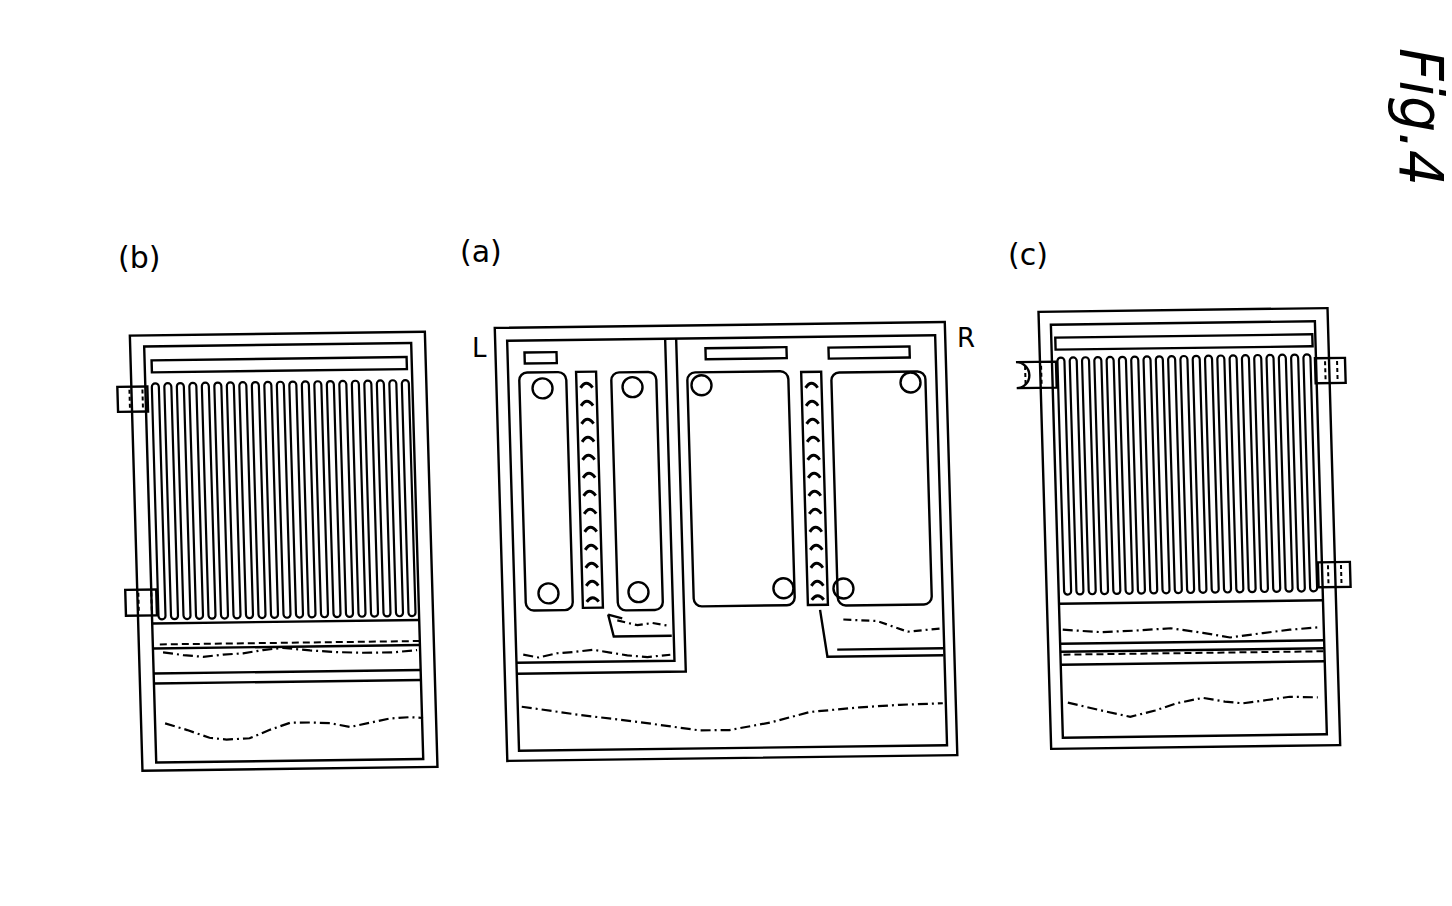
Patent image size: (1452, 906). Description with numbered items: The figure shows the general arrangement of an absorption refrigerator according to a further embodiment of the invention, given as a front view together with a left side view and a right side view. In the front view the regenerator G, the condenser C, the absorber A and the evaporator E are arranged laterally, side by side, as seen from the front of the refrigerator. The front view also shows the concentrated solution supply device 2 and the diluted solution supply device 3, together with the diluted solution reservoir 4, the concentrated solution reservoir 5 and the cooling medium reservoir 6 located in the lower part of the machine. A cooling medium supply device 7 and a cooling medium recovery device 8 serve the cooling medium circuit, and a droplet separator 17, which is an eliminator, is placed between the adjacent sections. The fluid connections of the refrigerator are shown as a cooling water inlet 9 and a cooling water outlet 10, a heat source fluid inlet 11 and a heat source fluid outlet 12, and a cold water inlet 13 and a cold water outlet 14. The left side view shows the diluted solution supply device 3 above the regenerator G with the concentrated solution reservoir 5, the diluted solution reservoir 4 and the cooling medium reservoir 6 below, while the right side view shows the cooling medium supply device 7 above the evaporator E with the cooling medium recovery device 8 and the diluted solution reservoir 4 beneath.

The concentrated solution supply device 2 is at (733, 355).
The diluted solution supply device 3 is at (207, 368).
The diluted solution reservoir 4 is at (315, 738).
The concentrated solution reservoir 5 is at (253, 662).
The cooling medium reservoir 6 is at (392, 630).
The cooling medium supply device 7 is at (845, 353).
The cooling medium recovery device 8 is at (895, 637).
The cooling water inlet 9 is at (637, 600).
The cooling water outlet 10 is at (633, 387).
The heat source fluid inlet 11 is at (543, 600).
The heat source fluid outlet 12 is at (548, 383).
The cold water inlet 13 is at (843, 600).
The cold water outlet 14 is at (907, 380).
The droplet separator 17 is at (585, 373).
The regenerator G is at (287, 380).
The condenser C is at (637, 440).
The absorber A is at (743, 422).
The evaporator E is at (862, 422).